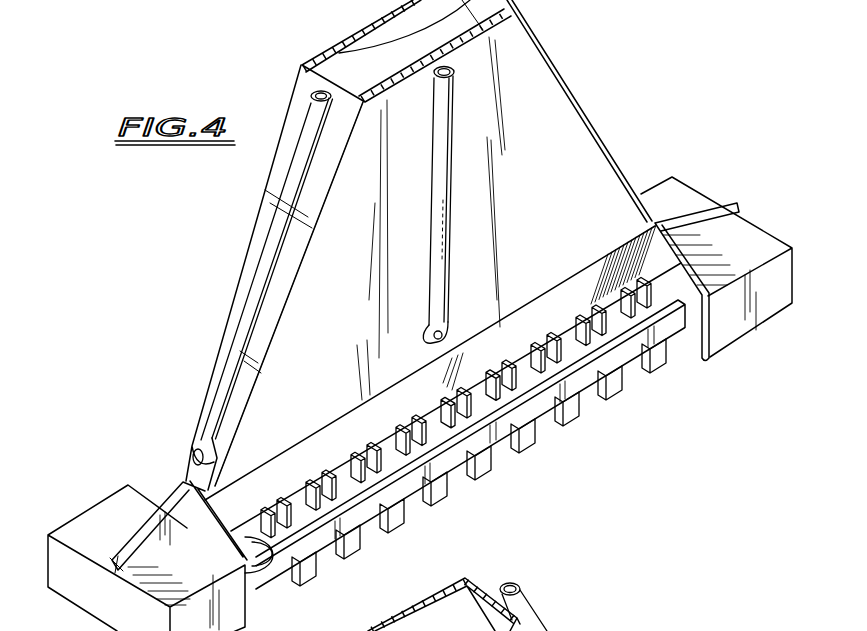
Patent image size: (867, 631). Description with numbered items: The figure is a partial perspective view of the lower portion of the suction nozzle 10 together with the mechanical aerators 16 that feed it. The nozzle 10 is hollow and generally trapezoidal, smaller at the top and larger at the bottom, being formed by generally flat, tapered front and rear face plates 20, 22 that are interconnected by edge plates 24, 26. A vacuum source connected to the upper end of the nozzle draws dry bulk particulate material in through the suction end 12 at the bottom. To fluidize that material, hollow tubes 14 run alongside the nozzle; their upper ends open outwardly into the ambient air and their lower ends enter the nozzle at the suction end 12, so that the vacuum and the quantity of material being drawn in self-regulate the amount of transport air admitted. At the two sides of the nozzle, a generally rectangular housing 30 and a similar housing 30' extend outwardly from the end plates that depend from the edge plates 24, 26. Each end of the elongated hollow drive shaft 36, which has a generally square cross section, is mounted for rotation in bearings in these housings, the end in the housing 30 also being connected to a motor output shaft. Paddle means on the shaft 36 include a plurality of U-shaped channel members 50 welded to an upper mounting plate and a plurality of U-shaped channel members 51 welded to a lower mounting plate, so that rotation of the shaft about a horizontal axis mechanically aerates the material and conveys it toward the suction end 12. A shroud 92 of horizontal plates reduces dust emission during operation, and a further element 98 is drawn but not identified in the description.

The suction nozzle 10 is at (413, 315).
The suction end 12 is at (424, 417).
The hollow tubes 14 is at (245, 311).
The mechanical aerators 16 is at (579, 435).
The front face plate 20 is at (582, 155).
The rear face plate 22 is at (259, 215).
The edge plate 24 is at (315, 192).
The edge plate 26 is at (330, 46).
The rectangular housing 30 is at (141, 544).
The rectangular housing 30' is at (719, 267).
The hollow drive shaft 36 is at (367, 507).
The U-shaped channel members 50 is at (497, 383).
The U-shaped channel members 51 is at (623, 388).
The shroud 92 is at (292, 464).
The back wall 98 is at (546, 306).